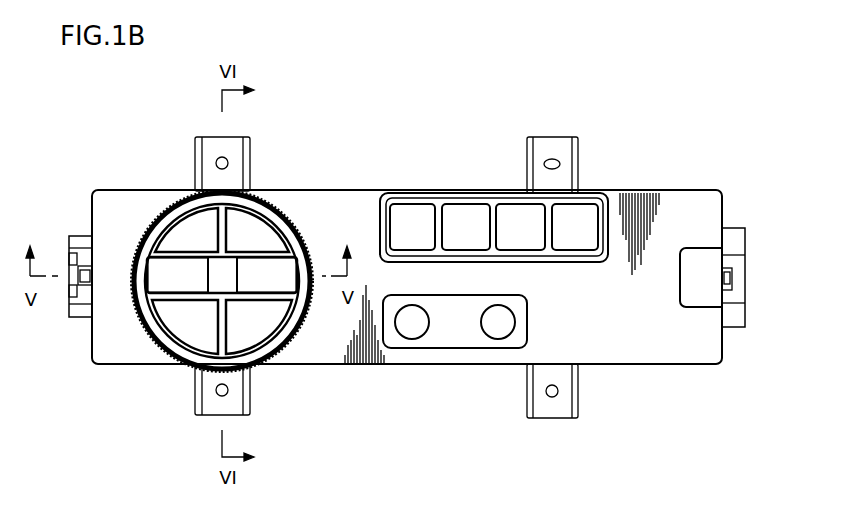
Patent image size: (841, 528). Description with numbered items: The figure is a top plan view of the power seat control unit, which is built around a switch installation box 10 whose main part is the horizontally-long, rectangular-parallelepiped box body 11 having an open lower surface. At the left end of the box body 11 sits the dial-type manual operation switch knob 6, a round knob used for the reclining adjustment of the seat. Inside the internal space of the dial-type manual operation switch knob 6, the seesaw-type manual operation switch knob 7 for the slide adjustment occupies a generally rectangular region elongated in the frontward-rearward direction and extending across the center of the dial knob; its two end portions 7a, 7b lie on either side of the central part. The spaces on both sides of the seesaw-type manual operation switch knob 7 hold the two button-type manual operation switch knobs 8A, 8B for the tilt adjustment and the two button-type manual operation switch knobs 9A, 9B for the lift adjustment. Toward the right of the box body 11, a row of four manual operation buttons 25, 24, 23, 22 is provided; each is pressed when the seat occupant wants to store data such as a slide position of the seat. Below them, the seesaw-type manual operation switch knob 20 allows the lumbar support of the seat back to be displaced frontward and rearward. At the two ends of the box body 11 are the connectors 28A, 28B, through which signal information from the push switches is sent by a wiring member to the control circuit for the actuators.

The switch installation box 10 is at (651, 372).
The box body 11 is at (662, 198).
The dial-type manual operation switch knob 6 is at (292, 232).
The seesaw-type manual operation switch knob 7 is at (198, 275).
The hub right portion 7a is at (280, 272).
The hub left portion 7b is at (160, 280).
The button-type manual operation switch knob 9A is at (196, 218).
The button-type manual operation switch knob 8A is at (250, 218).
The button-type manual operation switch knob 9B is at (196, 330).
The button-type manual operation switch knob 8B is at (258, 330).
The manual operation button 25 is at (412, 222).
The manual operation button 24 is at (465, 222).
The manual operation button 23 is at (525, 222).
The manual operation button 22 is at (582, 215).
The seesaw-type manual operation switch knob 20 is at (455, 330).
The connector 28A is at (80, 237).
The connector 28B is at (735, 230).